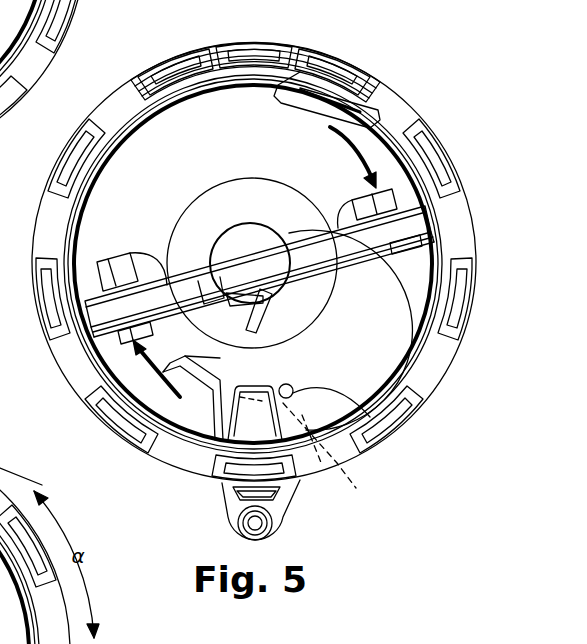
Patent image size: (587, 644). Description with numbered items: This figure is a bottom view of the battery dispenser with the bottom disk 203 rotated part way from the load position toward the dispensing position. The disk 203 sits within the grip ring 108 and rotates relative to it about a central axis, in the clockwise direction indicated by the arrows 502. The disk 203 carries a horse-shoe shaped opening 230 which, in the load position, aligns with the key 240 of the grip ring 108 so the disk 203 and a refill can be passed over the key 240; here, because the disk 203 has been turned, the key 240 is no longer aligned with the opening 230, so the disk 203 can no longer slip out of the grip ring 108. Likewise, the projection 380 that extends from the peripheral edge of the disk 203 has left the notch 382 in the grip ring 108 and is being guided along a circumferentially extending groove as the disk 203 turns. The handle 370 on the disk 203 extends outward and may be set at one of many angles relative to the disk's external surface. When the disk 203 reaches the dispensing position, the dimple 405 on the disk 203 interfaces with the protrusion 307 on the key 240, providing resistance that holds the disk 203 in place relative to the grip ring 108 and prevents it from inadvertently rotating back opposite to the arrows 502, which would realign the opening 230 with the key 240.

The grip ring 108 is at (467, 218).
The notch 382 is at (233, 52).
The handle 370 is at (300, 243).
The projection 380 is at (352, 108).
The arrows 502 is at (362, 158).
The bottom disk 203 is at (383, 330).
The dimple 405 is at (387, 437).
The horse-shoe shaped opening 230 is at (193, 406).
The key 240 is at (268, 427).
The protrusion 307 is at (316, 448).